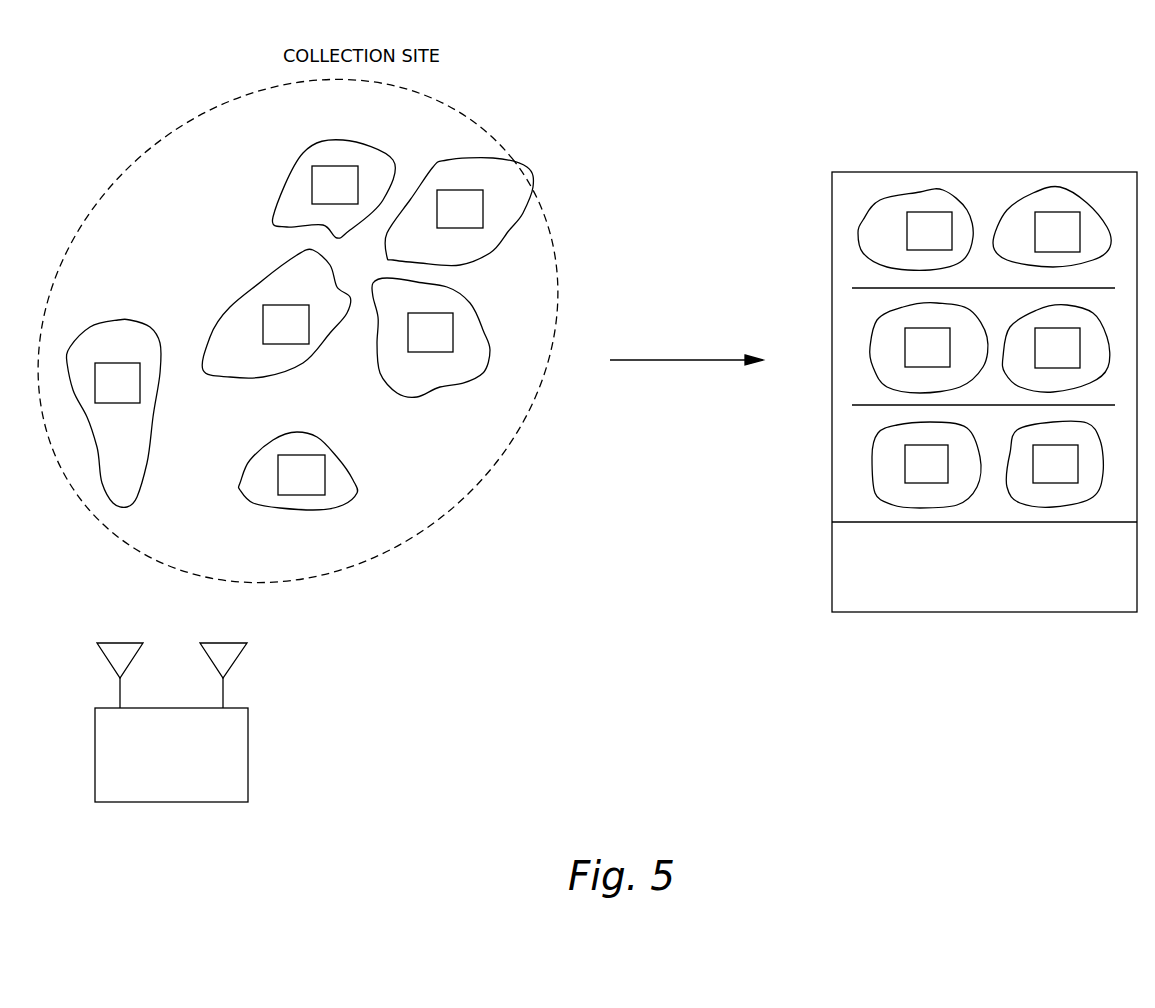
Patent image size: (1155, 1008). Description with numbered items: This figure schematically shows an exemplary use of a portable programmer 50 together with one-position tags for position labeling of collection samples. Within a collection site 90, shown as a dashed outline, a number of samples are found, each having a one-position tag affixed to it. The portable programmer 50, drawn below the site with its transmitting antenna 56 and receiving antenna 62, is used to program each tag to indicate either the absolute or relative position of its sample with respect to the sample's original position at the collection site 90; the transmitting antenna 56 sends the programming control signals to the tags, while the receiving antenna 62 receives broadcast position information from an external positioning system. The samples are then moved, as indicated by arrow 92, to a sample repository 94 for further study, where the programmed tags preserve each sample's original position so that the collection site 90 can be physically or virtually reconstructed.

The portable programmer 50 is at (182, 742).
The transmitting antenna 56 is at (223, 643).
The receiving antenna 62 is at (120, 643).
The collection site 90 is at (537, 137).
The arrow 92 is at (687, 359).
The sample repository 94 is at (831, 220).